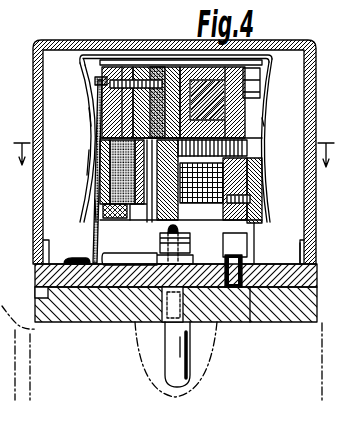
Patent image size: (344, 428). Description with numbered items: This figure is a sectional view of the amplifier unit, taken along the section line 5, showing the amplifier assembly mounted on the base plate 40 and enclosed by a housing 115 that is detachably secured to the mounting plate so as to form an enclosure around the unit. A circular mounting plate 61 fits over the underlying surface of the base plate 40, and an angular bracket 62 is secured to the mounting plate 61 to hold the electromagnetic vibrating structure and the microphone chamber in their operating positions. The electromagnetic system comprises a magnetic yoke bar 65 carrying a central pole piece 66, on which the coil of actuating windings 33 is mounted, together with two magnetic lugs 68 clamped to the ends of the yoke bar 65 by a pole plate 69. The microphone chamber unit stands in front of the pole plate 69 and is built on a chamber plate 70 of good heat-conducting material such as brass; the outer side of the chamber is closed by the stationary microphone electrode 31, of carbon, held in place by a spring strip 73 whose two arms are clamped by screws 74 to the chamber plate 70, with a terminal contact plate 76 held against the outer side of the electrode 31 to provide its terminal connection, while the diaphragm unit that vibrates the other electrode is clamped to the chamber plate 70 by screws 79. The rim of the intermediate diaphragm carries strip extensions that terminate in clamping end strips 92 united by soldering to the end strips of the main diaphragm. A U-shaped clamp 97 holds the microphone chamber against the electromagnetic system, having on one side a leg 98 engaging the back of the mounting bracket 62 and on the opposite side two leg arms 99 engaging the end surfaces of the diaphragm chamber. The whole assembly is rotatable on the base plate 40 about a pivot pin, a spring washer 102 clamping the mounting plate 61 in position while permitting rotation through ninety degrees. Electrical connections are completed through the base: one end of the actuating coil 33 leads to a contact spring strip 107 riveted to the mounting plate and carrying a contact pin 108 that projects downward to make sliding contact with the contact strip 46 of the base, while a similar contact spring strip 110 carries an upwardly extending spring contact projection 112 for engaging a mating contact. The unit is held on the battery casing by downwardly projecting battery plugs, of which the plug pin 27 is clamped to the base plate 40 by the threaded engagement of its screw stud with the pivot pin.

The housing 115 is at (320, 41).
The section line 5 is at (167, 271).
The U-shaped clamp 97 is at (87, 53).
The leg arms 99 is at (81, 78).
The spring strip 73 is at (89, 117).
The screws 74 is at (87, 163).
The magnetic yoke bar 65 is at (245, 117).
The magnetic lugs 68 is at (270, 67).
The leg 98 is at (265, 122).
The central pole piece 66 is at (250, 150).
The chamber plate 70 is at (122, 62).
The clamping end strips 92 is at (155, 62).
The pole plate 69 is at (178, 62).
The actuating coil 33 is at (242, 183).
The stationary microphone electrode 31 is at (107, 190).
The spring contact projection 112 is at (97, 249).
The screws 79 is at (102, 81).
The terminal contact plate 76 is at (100, 205).
The mounting plate 61 is at (80, 264).
The spring washer 102 is at (170, 250).
The contact spring strip 110 is at (217, 254).
The angular bracket 62 is at (256, 238).
The contact pin 108 is at (257, 264).
The base plate 40 is at (315, 323).
The contact spring strip 107 is at (37, 293).
The contact strip 46 is at (247, 322).
The plug pin 27 is at (190, 373).